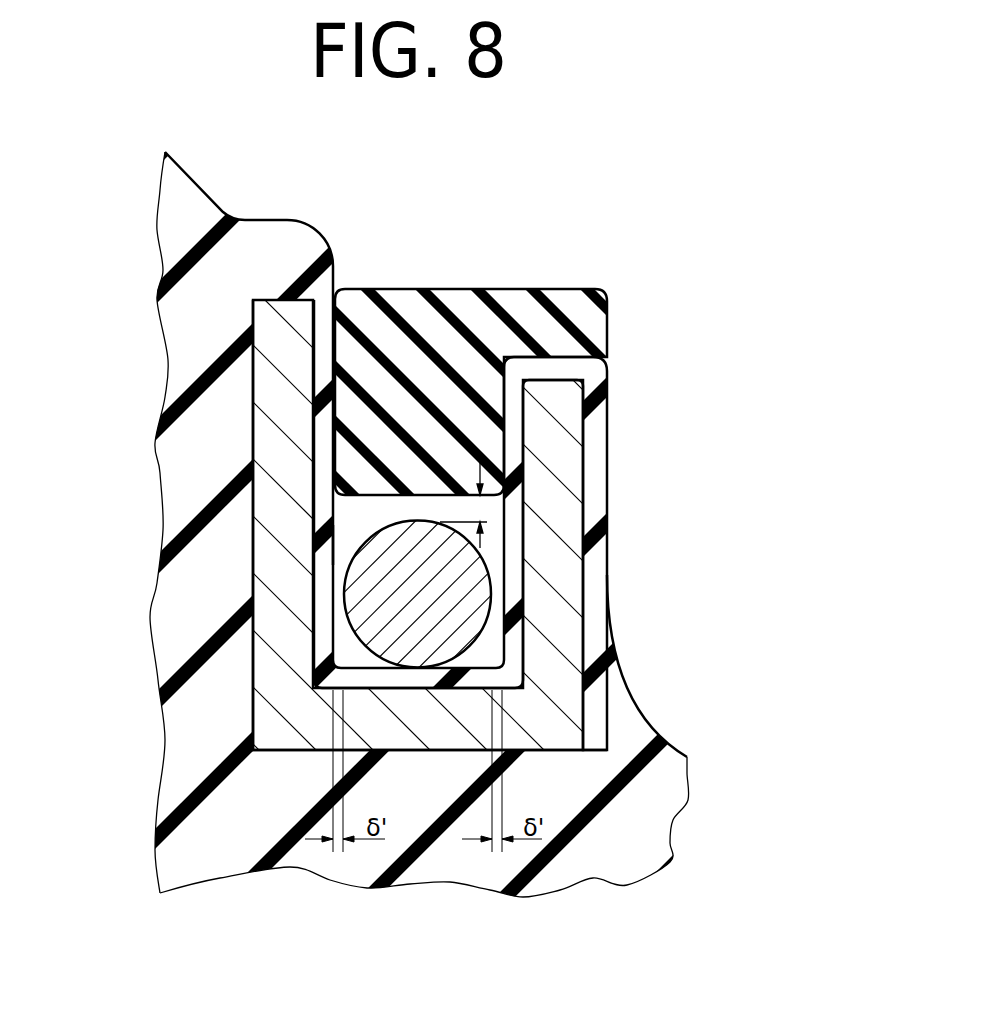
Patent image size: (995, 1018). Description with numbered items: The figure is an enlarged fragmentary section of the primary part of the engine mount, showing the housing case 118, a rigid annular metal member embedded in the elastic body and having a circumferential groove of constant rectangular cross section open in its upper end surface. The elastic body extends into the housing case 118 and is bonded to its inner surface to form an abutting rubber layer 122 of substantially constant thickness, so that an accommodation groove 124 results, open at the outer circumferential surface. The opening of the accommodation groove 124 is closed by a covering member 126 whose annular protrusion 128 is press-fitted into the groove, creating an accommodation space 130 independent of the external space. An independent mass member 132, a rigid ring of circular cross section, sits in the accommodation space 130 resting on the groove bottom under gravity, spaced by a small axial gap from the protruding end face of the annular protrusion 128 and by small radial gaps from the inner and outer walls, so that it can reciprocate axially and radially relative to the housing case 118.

The housing case 118 is at (557, 492).
The abutting rubber layer 122 is at (512, 578).
The accommodation groove 124 is at (334, 548).
The covering member 126 is at (449, 300).
The annular protrusion 128 is at (448, 443).
The accommodation space 130 is at (348, 508).
The independent mass member 132 is at (367, 585).